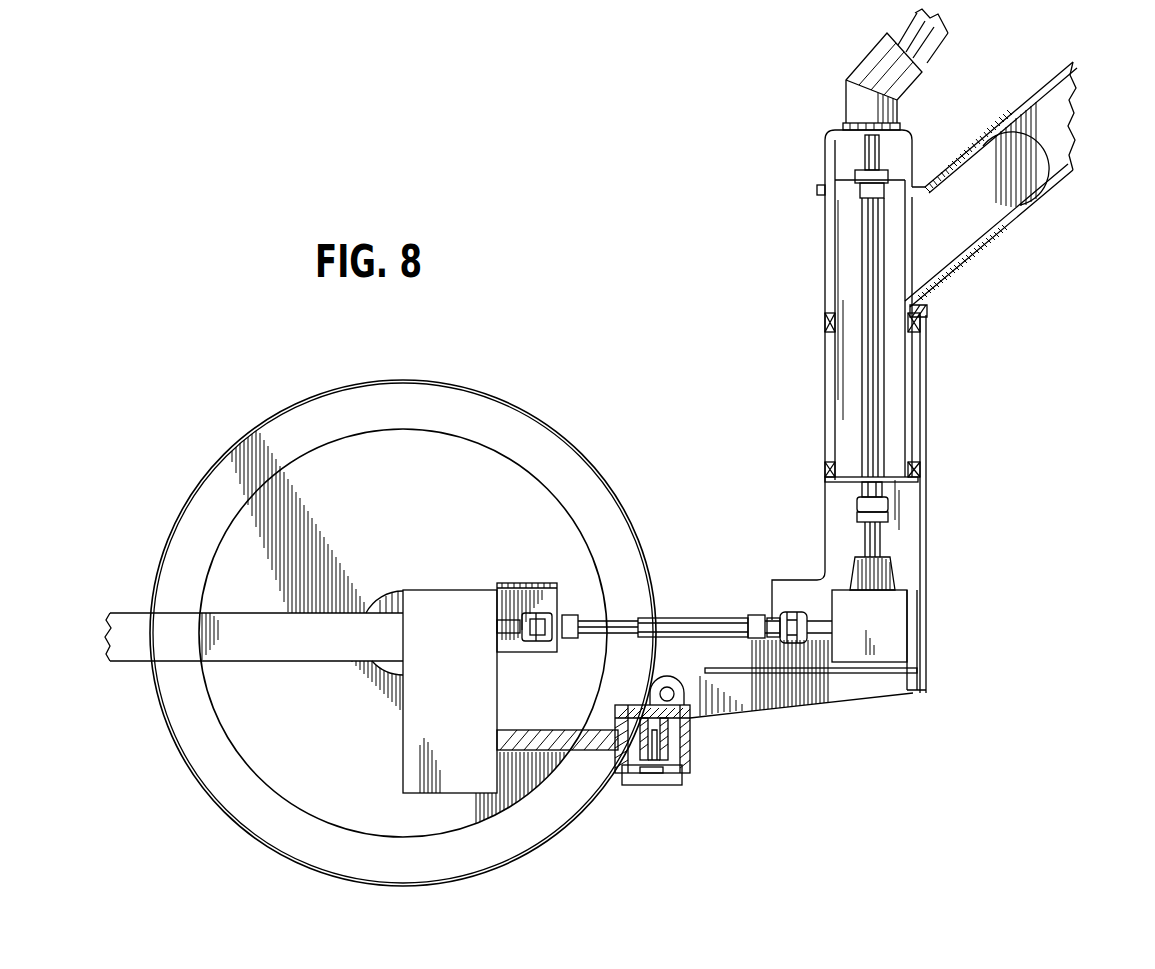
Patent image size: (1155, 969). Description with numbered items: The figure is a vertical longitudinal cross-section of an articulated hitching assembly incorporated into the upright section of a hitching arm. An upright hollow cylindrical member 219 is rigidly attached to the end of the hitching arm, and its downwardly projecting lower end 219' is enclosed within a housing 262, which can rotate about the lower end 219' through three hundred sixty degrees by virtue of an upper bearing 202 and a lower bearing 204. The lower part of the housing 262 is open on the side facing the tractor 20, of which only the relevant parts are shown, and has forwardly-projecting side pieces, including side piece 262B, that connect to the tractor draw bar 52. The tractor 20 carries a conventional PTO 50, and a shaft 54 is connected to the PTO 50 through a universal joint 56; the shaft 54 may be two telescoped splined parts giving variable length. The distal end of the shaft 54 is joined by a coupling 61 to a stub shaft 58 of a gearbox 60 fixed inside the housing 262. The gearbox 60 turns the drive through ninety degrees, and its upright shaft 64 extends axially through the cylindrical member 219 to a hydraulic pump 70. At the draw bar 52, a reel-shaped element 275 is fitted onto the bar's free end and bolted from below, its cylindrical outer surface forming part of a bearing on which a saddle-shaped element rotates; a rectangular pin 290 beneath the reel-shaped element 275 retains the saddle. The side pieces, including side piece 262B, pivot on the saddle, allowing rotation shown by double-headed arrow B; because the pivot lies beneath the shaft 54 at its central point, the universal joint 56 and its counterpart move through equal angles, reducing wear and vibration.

The tractor 20 is at (503, 378).
The PTO 50 is at (528, 574).
The universal joint 56 is at (540, 642).
The shaft 54 is at (720, 618).
The coupler 61 is at (785, 610).
The stub shaft 58 is at (823, 634).
The gearbox 60 is at (888, 618).
The draw bar 52 is at (540, 752).
The reel-shaped element 275 is at (690, 722).
The rectangular pin 290 is at (653, 772).
The forwardly-projecting side piece 262B is at (792, 700).
The housing 262 is at (918, 530).
The upright hollow cylindrical member 219 is at (819, 302).
The lower end of the cylindrical member 219' is at (977, 332).
The upper bearing 202 is at (927, 312).
The lower bearing 204 is at (927, 470).
The upright shaft 64 is at (870, 350).
The hydraulic pump 70 is at (880, 60).
The double-headed arrow B is at (752, 637).